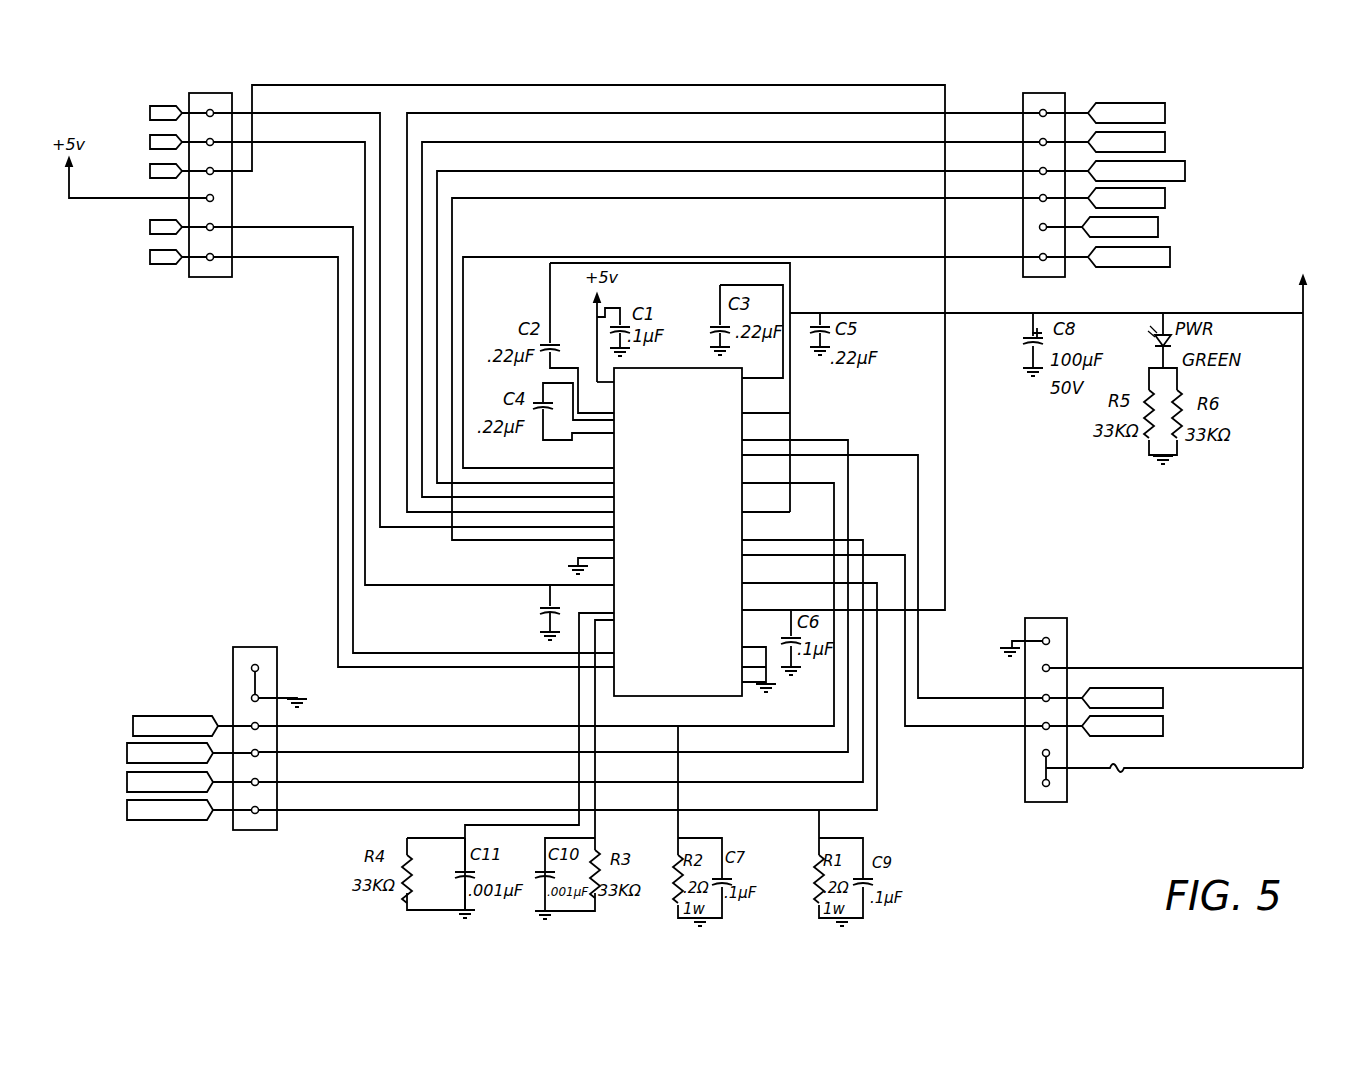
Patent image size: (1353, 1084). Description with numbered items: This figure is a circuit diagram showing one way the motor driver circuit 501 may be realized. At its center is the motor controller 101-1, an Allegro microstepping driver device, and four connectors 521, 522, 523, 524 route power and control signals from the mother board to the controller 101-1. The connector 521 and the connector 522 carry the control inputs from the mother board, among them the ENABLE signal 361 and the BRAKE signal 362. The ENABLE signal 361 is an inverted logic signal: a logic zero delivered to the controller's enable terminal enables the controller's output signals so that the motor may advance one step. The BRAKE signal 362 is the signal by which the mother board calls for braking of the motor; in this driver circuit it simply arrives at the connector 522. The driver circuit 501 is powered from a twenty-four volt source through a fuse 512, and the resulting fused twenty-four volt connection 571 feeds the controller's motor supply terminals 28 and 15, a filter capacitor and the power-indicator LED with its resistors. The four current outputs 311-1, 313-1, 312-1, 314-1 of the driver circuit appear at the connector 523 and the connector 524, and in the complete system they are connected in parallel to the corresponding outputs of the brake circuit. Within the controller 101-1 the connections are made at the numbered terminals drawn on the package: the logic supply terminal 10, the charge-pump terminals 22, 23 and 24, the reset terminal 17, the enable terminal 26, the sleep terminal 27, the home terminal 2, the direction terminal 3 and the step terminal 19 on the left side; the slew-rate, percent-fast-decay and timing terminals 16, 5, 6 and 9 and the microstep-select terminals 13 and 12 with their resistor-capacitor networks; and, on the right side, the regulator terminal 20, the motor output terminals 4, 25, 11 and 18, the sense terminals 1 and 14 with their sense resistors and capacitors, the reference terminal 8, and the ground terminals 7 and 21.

The driver circuit 501 is at (316, 403).
The motor controller 101-1 is at (702, 368).
The connector 521 is at (189, 100).
The connector 522 is at (1023, 98).
The connector 523 is at (277, 830).
The connector 524 is at (1025, 781).
The ENABLE signal 361 is at (1185, 171).
The BRAKE signal 362 is at (1158, 227).
The fused +24V power supply 571 is at (1290, 241).
The current output 311-1 is at (127, 751).
The current output 313-1 is at (127, 780).
The current output 312-1 is at (1163, 699).
The current output 314-1 is at (1163, 727).
The fuse 512 is at (1143, 766).
The Vdd(Data) pin 10 is at (607, 378).
The VCP pin 22 is at (665, 387).
The CP1 pin 23 is at (572, 418).
The CP2 pin 24 is at (570, 437).
The Reset pin 17 is at (751, 363).
The Enable pin 26 is at (610, 475).
The Sleep pin 27 is at (610, 489).
The Home pin 2 is at (610, 504).
The Dir pin 3 is at (605, 519).
The Step pin 19 is at (600, 533).
The SR pin 16 is at (593, 556).
The PFD pin 5 is at (414, 364).
The RC1 pin 6 is at (508, 754).
The RC2 pin 9 is at (590, 622).
The MS1 pin 13 is at (416, 440).
The MS2 pin 12 is at (607, 662).
The VReg pin 20 is at (746, 334).
The VBB1 pin 28 is at (766, 404).
The OUT1A pin 4 is at (553, 587).
The OUT1B pin 25 is at (762, 453).
The Sense1 pin 1 is at (546, 597).
The VBB2 pin 15 is at (766, 503).
The OUT2A pin 11 is at (561, 651).
The OUT2B pin 18 is at (778, 552).
The Sense2 pin 14 is at (568, 687).
The Ref pin 8 is at (579, 348).
The AGnd pin 7 is at (759, 660).
The PGND pin 21 is at (754, 662).